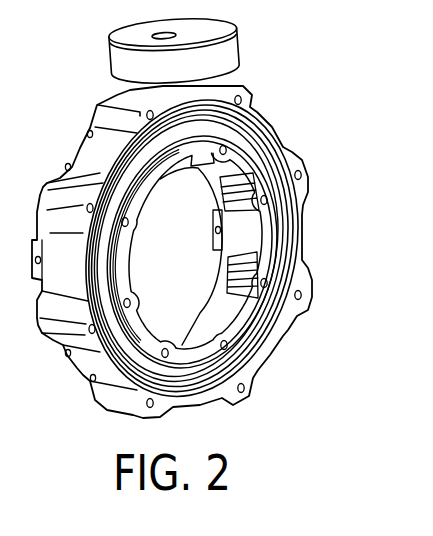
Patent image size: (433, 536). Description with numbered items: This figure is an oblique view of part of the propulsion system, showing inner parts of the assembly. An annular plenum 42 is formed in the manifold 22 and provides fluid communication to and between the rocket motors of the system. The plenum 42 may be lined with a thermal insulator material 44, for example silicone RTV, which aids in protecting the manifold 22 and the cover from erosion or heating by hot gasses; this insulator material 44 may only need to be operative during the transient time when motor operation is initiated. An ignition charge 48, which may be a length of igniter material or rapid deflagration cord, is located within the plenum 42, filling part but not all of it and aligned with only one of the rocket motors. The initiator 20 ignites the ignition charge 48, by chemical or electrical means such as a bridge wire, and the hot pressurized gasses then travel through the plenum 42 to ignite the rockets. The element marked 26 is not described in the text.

The initiator 20 is at (228, 50).
The manifold 22 is at (254, 98).
The bearing ring 26 is at (178, 249).
The annular plenum 42 is at (258, 332).
The thermal insulator material 44 is at (287, 262).
The ignition charge 48 is at (112, 98).